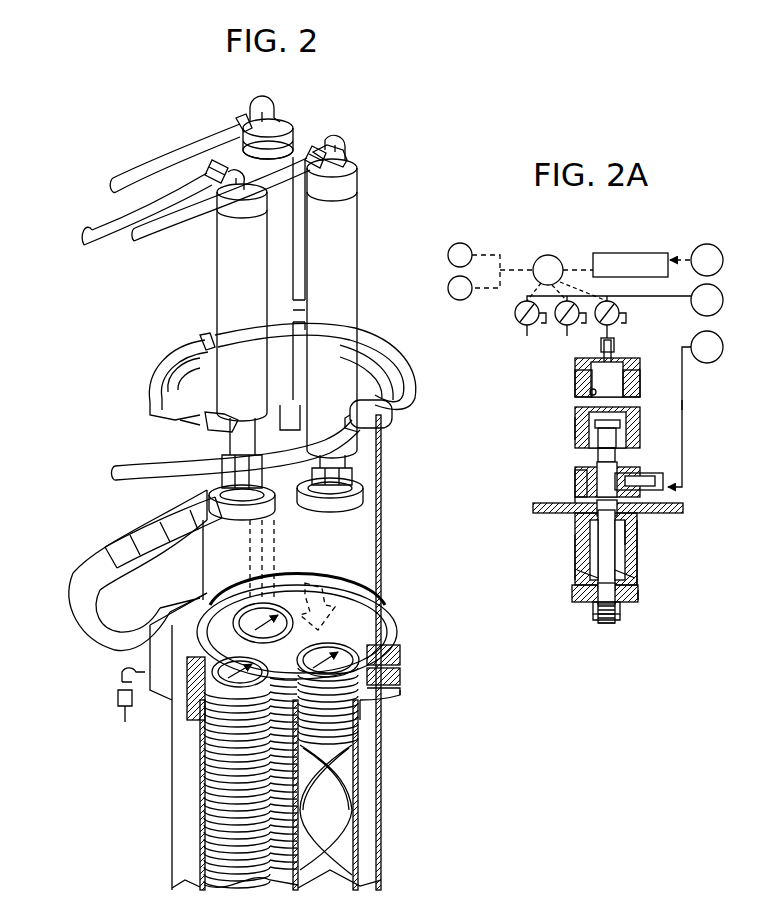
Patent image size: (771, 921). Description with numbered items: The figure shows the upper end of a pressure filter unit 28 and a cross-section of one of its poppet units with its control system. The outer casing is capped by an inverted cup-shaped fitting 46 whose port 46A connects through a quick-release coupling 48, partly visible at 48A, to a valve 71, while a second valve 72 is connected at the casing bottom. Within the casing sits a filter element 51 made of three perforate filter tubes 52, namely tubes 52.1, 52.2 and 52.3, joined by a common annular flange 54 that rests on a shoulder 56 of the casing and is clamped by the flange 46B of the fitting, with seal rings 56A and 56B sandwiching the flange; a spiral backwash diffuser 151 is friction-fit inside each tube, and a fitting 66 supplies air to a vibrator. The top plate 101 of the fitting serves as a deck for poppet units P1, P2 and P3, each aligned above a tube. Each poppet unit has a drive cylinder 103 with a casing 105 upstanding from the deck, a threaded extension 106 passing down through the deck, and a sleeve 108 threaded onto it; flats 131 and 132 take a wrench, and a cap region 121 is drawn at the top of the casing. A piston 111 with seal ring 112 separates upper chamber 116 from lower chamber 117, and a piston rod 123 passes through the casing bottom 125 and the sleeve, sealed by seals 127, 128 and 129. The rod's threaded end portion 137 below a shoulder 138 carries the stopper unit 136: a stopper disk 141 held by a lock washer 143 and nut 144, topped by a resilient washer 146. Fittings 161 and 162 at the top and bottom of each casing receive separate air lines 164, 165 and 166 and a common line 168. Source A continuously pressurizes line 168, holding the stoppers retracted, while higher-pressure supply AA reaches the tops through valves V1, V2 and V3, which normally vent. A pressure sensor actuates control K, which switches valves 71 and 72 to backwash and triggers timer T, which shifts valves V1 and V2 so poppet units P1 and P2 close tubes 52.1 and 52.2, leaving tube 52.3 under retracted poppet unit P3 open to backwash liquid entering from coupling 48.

In FIG. 2, the poppet unit P1 is at (210, 287).
In FIG. 2A, the poppet unit P1 is at (572, 437).
In FIG. 2, the poppet unit P2 is at (252, 105).
In FIG. 2, the poppet unit P3 is at (362, 253).
In FIG. 2, the flat 131 is at (296, 130).
In FIG. 2A, the flat 131 is at (575, 374).
In FIG. 2, the pressure fluid fitting 161 is at (336, 143).
In FIG. 2A, the pressure fluid fitting 161 is at (617, 343).
In FIG. 2, the pressurized air line 164 is at (105, 230).
In FIG. 2A, the pressurized air line 164 is at (605, 328).
In FIG. 2, the pressurized air line 165 is at (155, 165).
In FIG. 2A, the pressurized air line 165 is at (565, 330).
In FIG. 2, the pressurized air line 166 is at (168, 225).
In FIG. 2A, the pressurized air line 166 is at (519, 326).
In FIG. 2, the top plate 101 is at (370, 390).
In FIG. 2A, the top plate 101 is at (683, 508).
In FIG. 2, the pressure fluid fitting 162 is at (380, 423).
In FIG. 2A, the pressure fluid fitting 162 is at (658, 490).
In FIG. 2, the common pressurized air line 168 is at (130, 468).
In FIG. 2A, the common pressurized air line 168 is at (684, 402).
In FIG. 2, the stopper unit 136 is at (222, 518).
In FIG. 2A, the stopper unit 136 is at (642, 593).
In FIG. 2, the flat 132 is at (332, 494).
In FIG. 2A, the flat 132 is at (577, 577).
In FIG. 2, the piston rod 123 is at (248, 590).
In FIG. 2A, the piston rod 123 is at (600, 462).
In FIG. 2, the fitting 46 is at (385, 520).
In FIG. 2, the port 46A is at (150, 655).
In FIG. 2, the flange 46B is at (400, 657).
In FIG. 2, the quick-release coupling 48 is at (75, 572).
In FIG. 2, the quick-release coupling portion 48A is at (115, 548).
In FIG. 2, the pressure filter unit 28 is at (392, 600).
In FIG. 2, the annular flange 54 is at (355, 640).
In FIG. 2, the shoulder 56 is at (385, 702).
In FIG. 2, the seal ring 56A is at (400, 673).
In FIG. 2, the seal ring 56B is at (400, 690).
In FIG. 2, the filter element 51 is at (365, 722).
In FIG. 2, the filter tube 52 is at (215, 812).
In FIG. 2, the filter tube 52.1 is at (198, 845).
In FIG. 2, the filter tube 52.2 is at (275, 603).
In FIG. 2, the filter tube 52.3 is at (358, 763).
In FIG. 2, the spiral backwash diffuser 151 is at (343, 787).
In FIG. 2, the fitting 66 is at (117, 706).
In FIG. 2A, the valve 71 is at (448, 258).
In FIG. 2A, the valve 72 is at (448, 290).
In FIG. 2A, the multi-interval timer unit T is at (563, 270).
In FIG. 2A, the control K is at (623, 253).
In FIG. 2A, the pressurized air supply AA is at (625, 300).
In FIG. 2A, the source of pressurized air A is at (695, 409).
In FIG. 2A, the valve V1 is at (601, 306).
In FIG. 2A, the valve V2 is at (575, 307).
In FIG. 2A, the valve V3 is at (519, 306).
In FIG. 2A, the cap 121 is at (588, 364).
In FIG. 2A, the drive cylinder 103 is at (577, 385).
In FIG. 2A, the cylindrical casing 105 is at (590, 392).
In FIG. 2A, the upper chamber 116 is at (592, 410).
In FIG. 2A, the pressure seal ring 112 is at (622, 426).
In FIG. 2A, the piston 111 is at (632, 443).
In FIG. 2A, the seal 127 is at (577, 487).
In FIG. 2A, the lower chamber 117 is at (590, 470).
In FIG. 2A, the bottom 125 is at (578, 499).
In FIG. 2A, the seal 129 is at (578, 525).
In FIG. 2A, the threaded extension 106 is at (637, 530).
In FIG. 2A, the seal 128 is at (575, 552).
In FIG. 2A, the sleeve 108 is at (637, 550).
In FIG. 2A, the resilient washer 146 is at (637, 583).
In FIG. 2A, the shoulder 138 is at (640, 597).
In FIG. 2A, the stopper disk 141 is at (625, 605).
In FIG. 2A, the threaded end portion 137 is at (595, 618).
In FIG. 2A, the lock washer 143 is at (620, 610).
In FIG. 2A, the nut 144 is at (612, 622).